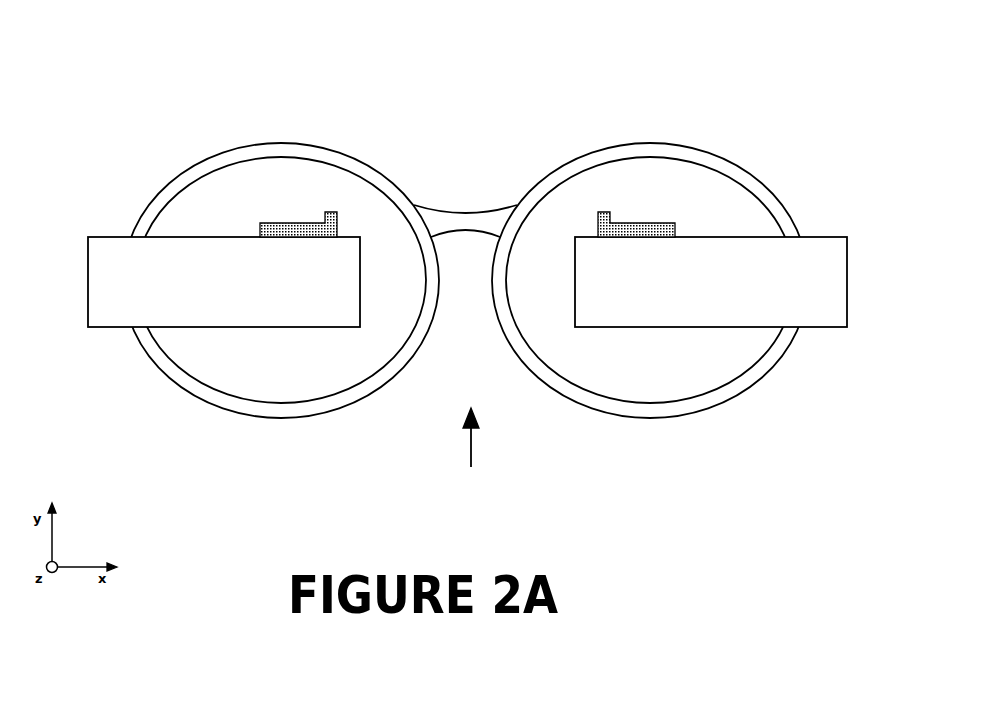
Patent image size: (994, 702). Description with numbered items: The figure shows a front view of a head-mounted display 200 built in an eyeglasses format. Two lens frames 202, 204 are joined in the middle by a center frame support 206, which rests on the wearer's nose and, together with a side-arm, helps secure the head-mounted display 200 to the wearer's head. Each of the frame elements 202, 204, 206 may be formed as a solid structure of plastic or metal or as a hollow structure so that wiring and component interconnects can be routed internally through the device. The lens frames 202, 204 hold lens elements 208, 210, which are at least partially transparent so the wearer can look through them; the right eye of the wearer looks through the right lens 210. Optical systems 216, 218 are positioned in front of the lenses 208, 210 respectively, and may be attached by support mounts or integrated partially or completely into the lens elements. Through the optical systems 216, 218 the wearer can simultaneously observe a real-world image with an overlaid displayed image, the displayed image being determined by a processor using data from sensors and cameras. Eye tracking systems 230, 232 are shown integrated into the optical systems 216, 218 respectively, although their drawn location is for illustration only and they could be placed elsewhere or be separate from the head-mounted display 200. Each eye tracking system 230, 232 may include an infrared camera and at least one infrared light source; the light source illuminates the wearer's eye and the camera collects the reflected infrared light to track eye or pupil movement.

The head-mounted display 200 is at (470, 450).
The lens frame 202 is at (170, 383).
The lens frame 204 is at (772, 375).
The center frame support 206 is at (494, 210).
The lens element 208 is at (308, 402).
The lens element 210 is at (657, 402).
The optical system 216 is at (185, 237).
The optical system 218 is at (742, 237).
The eye tracking system 230 is at (297, 225).
The eye tracking system 232 is at (637, 223).